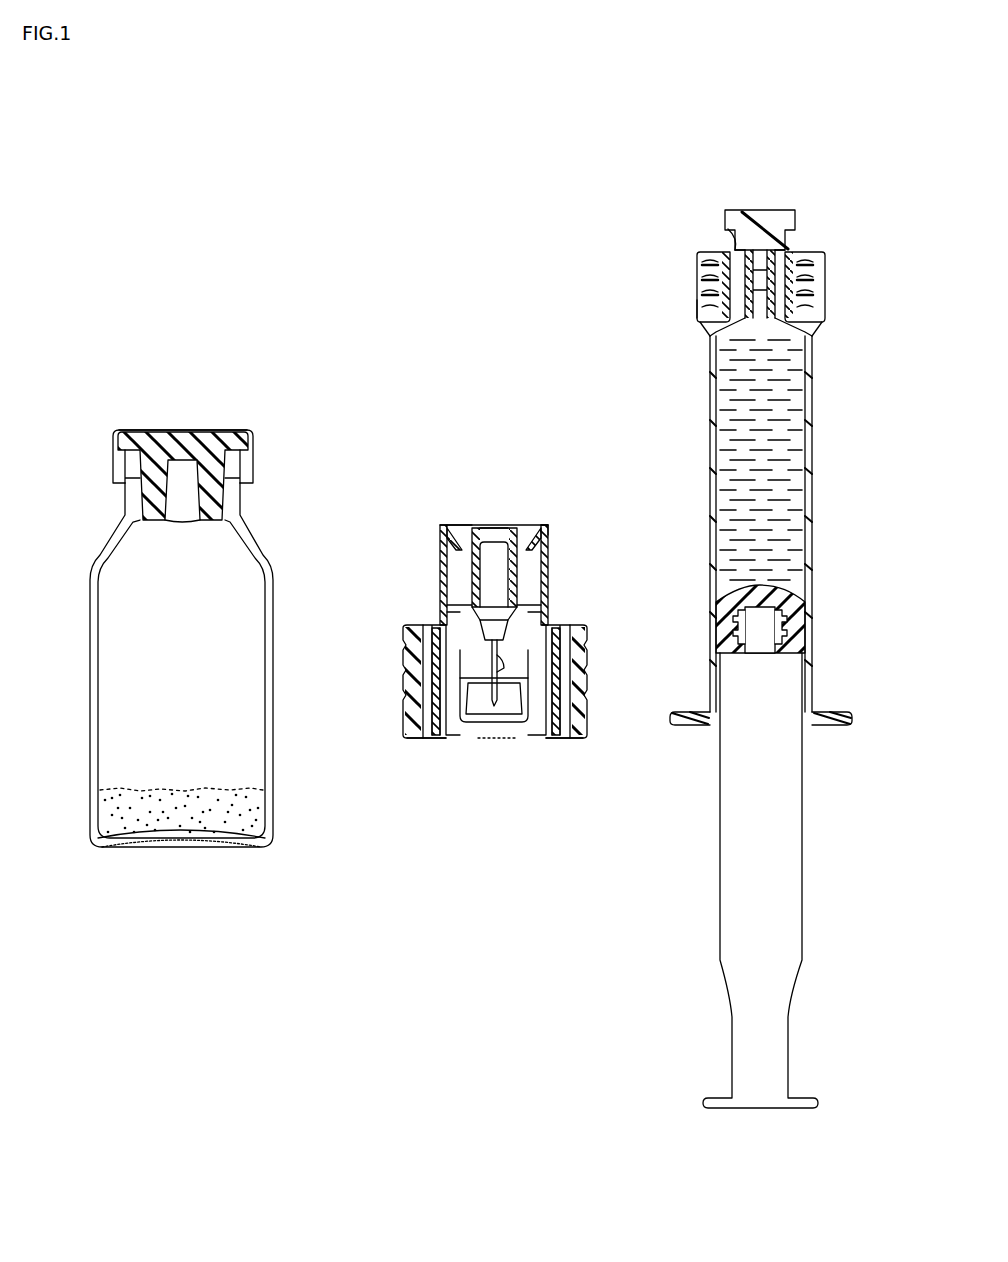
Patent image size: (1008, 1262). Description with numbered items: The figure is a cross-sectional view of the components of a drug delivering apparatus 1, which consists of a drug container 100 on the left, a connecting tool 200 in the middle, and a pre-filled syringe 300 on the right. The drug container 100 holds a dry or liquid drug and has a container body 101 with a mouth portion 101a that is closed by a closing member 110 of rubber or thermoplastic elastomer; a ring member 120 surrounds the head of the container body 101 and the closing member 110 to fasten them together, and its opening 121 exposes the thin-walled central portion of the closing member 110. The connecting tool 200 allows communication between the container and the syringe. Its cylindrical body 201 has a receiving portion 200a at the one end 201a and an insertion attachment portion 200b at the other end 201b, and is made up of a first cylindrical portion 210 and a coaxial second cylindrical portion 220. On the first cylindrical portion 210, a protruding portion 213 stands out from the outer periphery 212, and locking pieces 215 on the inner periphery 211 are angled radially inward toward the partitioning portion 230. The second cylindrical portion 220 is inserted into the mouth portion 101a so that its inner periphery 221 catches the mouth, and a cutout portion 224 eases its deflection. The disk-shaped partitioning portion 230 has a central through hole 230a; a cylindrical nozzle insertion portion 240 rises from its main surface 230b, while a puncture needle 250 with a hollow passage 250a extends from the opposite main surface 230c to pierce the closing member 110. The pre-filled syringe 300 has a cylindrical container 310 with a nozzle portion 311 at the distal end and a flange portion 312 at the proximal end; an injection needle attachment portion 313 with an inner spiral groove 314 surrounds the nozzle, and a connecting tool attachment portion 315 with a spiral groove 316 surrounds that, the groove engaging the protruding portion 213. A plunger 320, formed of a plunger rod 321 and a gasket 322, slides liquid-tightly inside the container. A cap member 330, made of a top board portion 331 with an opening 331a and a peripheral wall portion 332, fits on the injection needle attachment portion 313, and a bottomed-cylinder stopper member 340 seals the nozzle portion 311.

The drug delivering apparatus 1 is at (866, 98).
The drug container 100 is at (236, 398).
The container body 101 is at (94, 690).
The mouth portion 101a is at (228, 460).
The closing member 110 is at (120, 437).
The ring member 120 is at (115, 466).
The opening 121 is at (160, 431).
The connecting tool 200 is at (530, 515).
The receiving portion 200a is at (500, 522).
The insertion attachment portion 200b is at (505, 744).
The cylindrical body 201 is at (336, 618).
The one end 201a is at (546, 528).
The other end 201b is at (412, 740).
The first cylindrical portion 210 is at (432, 630).
The inner periphery 211 is at (443, 560).
The outer periphery 212 is at (452, 533).
The protruding portion 213 is at (534, 535).
The locking pieces 215 is at (462, 527).
The second cylindrical portion 220 is at (414, 678).
The inner periphery 221 is at (572, 740).
The cutout portion 224 is at (462, 727).
The partitioning portion 230 is at (508, 612).
The through hole 230a is at (510, 592).
The main surface 230b is at (470, 590).
The main surface 230c is at (462, 645).
The nozzle insertion portion 240 is at (518, 563).
The puncture needle 250 is at (500, 650).
The hollow passage 250a is at (502, 665).
The pre-filled syringe 300 is at (829, 198).
The cylindrical container 310 is at (812, 470).
The nozzle portion 311 is at (790, 253).
The flange portion 312 is at (850, 727).
The injection needle attachment portion 313 is at (810, 272).
The spiral groove 314 is at (812, 323).
The connecting tool attachment portion 315 is at (700, 299).
The spiral groove 316 is at (718, 323).
The plunger 320 is at (816, 1030).
The plunger rod 321 is at (802, 873).
The gasket 322 is at (790, 602).
The cap member 330 is at (630, 228).
The top board portion 331 is at (735, 262).
The opening 331a is at (743, 246).
The peripheral wall portion 332 is at (714, 270).
The stopper member 340 is at (760, 214).